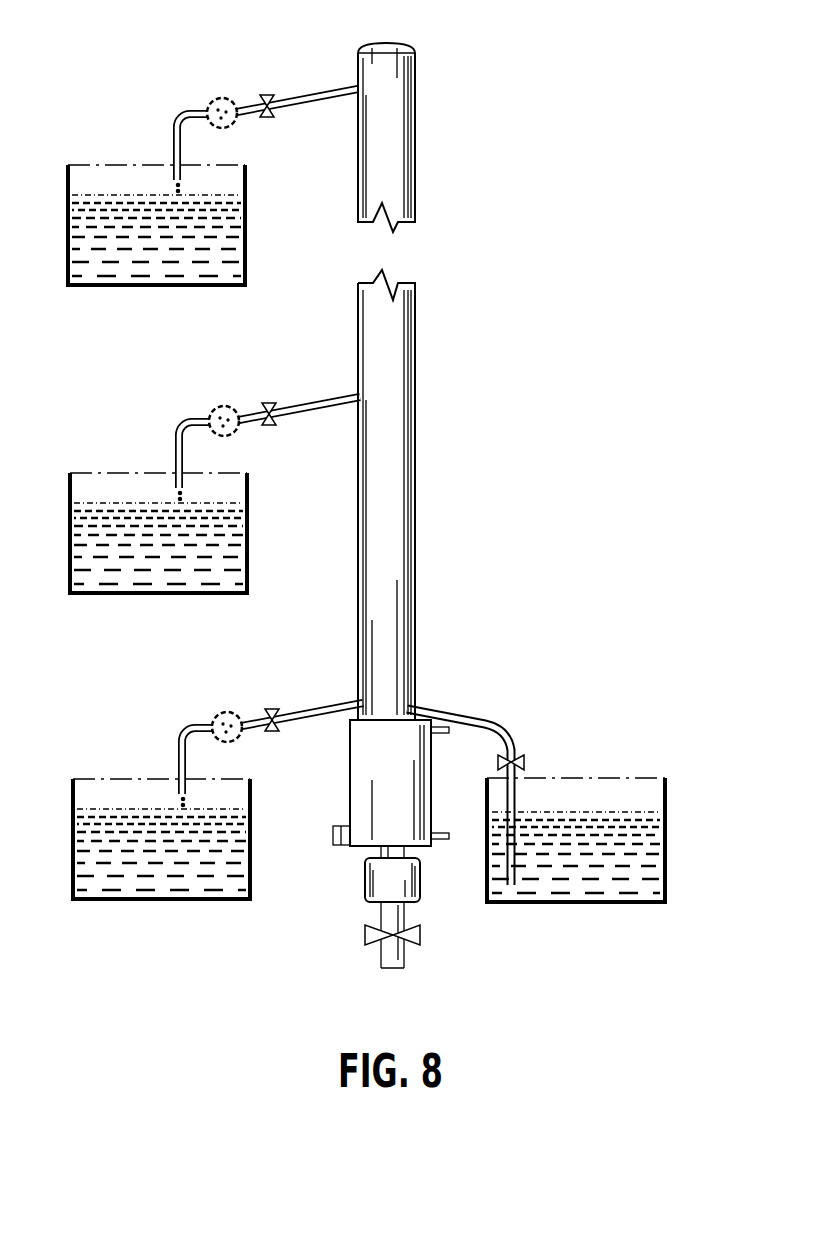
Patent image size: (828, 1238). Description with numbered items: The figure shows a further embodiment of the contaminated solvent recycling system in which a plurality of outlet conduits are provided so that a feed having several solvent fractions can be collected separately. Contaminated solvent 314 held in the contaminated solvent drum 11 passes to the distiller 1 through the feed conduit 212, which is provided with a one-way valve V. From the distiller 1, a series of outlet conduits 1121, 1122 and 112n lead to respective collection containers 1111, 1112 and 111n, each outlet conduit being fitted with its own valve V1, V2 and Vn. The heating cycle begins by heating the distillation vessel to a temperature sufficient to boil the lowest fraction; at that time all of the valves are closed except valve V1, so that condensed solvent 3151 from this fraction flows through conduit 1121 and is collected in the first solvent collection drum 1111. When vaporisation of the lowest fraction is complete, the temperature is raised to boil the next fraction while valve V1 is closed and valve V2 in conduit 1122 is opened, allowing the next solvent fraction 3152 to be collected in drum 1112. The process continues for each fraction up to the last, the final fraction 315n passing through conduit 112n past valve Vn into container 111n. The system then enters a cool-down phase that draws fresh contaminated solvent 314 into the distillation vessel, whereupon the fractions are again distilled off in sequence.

The distiller 1 is at (322, 790).
The contaminated solvent drum 11 is at (667, 848).
The feed conduit 212 is at (517, 740).
The one-way valve V is at (528, 761).
The contaminated solvent 314 is at (576, 852).
The nth collection container 111n is at (108, 286).
The second solvent collection drum 1112 is at (158, 570).
The first solvent collection drum 1111 is at (161, 878).
The nth outlet conduit 112n is at (292, 93).
The second outlet conduit 1122 is at (269, 408).
The first outlet conduit 1121 is at (272, 714).
The nth solvent fraction 315n is at (190, 258).
The second solvent fraction 3152 is at (158, 543).
The condensed solvent of the first fraction 3151 is at (161, 849).
The nth outlet conduit valve Vn is at (267, 95).
The second outlet conduit valve V2 is at (235, 392).
The first outlet conduit valve V1 is at (238, 699).